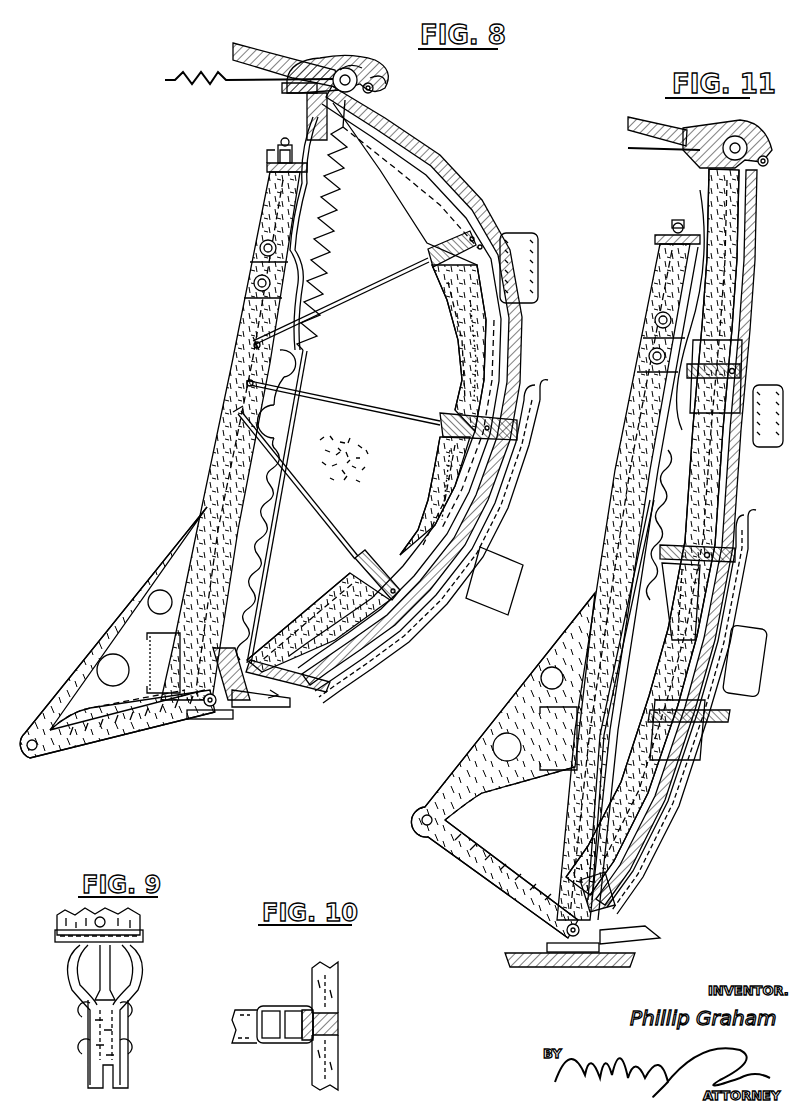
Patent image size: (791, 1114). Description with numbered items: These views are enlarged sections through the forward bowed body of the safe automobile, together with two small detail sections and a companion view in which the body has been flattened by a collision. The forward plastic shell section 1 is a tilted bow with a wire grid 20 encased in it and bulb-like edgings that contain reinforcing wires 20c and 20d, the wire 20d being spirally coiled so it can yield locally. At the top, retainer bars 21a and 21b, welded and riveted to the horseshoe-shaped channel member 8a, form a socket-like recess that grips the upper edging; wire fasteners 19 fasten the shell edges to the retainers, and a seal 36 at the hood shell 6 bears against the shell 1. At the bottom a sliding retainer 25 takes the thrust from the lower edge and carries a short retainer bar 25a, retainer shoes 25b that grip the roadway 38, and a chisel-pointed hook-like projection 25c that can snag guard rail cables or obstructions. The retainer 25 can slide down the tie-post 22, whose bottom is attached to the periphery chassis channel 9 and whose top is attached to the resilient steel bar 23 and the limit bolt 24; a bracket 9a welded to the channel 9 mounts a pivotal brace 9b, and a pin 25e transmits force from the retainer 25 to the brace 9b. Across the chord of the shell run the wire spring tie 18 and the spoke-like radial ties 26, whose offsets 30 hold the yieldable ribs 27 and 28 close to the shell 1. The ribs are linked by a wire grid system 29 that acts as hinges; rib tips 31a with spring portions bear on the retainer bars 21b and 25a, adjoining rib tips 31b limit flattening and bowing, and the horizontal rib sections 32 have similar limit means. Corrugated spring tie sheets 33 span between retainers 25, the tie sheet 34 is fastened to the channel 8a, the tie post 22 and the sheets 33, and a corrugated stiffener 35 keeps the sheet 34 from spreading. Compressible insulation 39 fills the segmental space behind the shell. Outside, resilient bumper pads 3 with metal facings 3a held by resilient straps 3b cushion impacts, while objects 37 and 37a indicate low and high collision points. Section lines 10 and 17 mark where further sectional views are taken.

In FIG. 8, the forward plastic shell section 1 is at (450, 176).
In FIG. 11, the forward plastic shell section 1 is at (756, 281).
In FIG. 8, the resilient bumper pads 3 is at (505, 500).
In FIG. 11, the resilient bumper pads 3 is at (728, 612).
In FIG. 8, the metal facings 3a is at (520, 480).
In FIG. 11, the metal facings 3a is at (740, 590).
In FIG. 8, the resilient straps 3b is at (533, 445).
In FIG. 11, the resilient straps 3b is at (745, 568).
In FIG. 8, the hood shell 6 is at (247, 49).
In FIG. 11, the hood shell 6 is at (670, 132).
In FIG. 8, the channel member 8a is at (267, 158).
In FIG. 11, the channel member 8a is at (657, 236).
In FIG. 9, the channel member 8a is at (60, 944).
In FIG. 8, the channel 9 is at (267, 148).
In FIG. 11, the channel 9 is at (556, 770).
In FIG. 8, the bracket 9a is at (113, 620).
In FIG. 11, the bracket 9a is at (460, 765).
In FIG. 10, the bracket 9a is at (262, 1010).
In FIG. 8, the brace 9b is at (125, 738).
In FIG. 11, the brace 9b is at (472, 862).
In FIG. 8, the section line 10— 10 is at (168, 550).
In FIG. 8, the section line 17 is at (411, 405).
In FIG. 8, the wire spring tie 18 is at (312, 350).
In FIG. 11, the wire spring tie 18 is at (652, 650).
In FIG. 8, the wire fasteners 19 is at (345, 56).
In FIG. 8, the wire grid 20 is at (483, 243).
In FIG. 8, the reinforcing wire 20c is at (358, 68).
In FIG. 8, the reinforcing wire 20d is at (236, 708).
In FIG. 8, the retainer bar 21a is at (372, 78).
In FIG. 8, the retainer bar 21b is at (337, 67).
In FIG. 8, the tie-post 22 is at (247, 384).
In FIG. 9, the tie-post 22 is at (87, 1075).
In FIG. 10, the tie-post 22 is at (285, 1043).
In FIG. 8, the resilient steel bar 23 is at (262, 215).
In FIG. 9, the resilient steel bar 23 is at (72, 975).
In FIG. 8, the limit bolt 24 is at (287, 147).
In FIG. 9, the limit bolt 24 is at (112, 972).
In FIG. 8, the sliding retainer 25 is at (215, 475).
In FIG. 11, the sliding retainer 25 is at (572, 853).
In FIG. 10, the sliding retainer 25 is at (338, 1022).
In FIG. 8, the retainer bar 25a is at (255, 616).
In FIG. 8, the retainer shoe 25b is at (210, 722).
In FIG. 11, the retainer shoe 25b is at (557, 954).
In FIG. 8, the hook-like projection 25c is at (262, 706).
In FIG. 11, the hook-like projection 25c is at (645, 933).
In FIG. 8, the pin 25e is at (205, 707).
In FIG. 11, the pin 25e is at (566, 930).
In FIG. 8, the radial ties 26 is at (386, 275).
In FIG. 8, the yieldable rib 27 is at (413, 217).
In FIG. 11, the yieldable rib 27 is at (740, 305).
In FIG. 8, the yieldable rib 28 is at (457, 358).
In FIG. 11, the yieldable rib 28 is at (723, 500).
In FIG. 8, the wire grid system 29 is at (386, 183).
In FIG. 8, the offsets 30 is at (427, 255).
In FIG. 8, the rib tips 31a is at (338, 150).
In FIG. 8, the adjoining rib tips 31b is at (430, 252).
In FIG. 8, the horizontal rib sections 32 is at (440, 262).
In FIG. 8, the spring tie sheets 33 is at (240, 590).
In FIG. 11, the spring tie sheets 33 is at (583, 817).
In FIG. 10, the spring tie sheets 33 is at (312, 985).
In FIG. 8, the tie sheet 34 is at (255, 346).
In FIG. 8, the corrugated stiffener 35 is at (287, 420).
In FIG. 8, the seal 36 is at (374, 89).
In FIG. 11, the seal 36 is at (765, 166).
In FIG. 8, the object 37 is at (480, 605).
In FIG. 11, the object 37 is at (733, 690).
In FIG. 8, the object 37a is at (540, 222).
In FIG. 11, the object 37a is at (762, 448).
In FIG. 11, the roadway 38 is at (520, 953).
In FIG. 8, the resilient insulation 39 is at (336, 456).